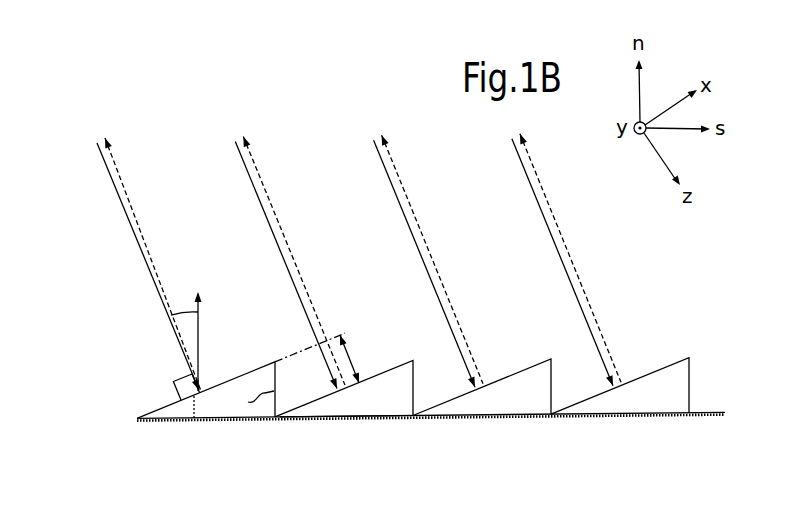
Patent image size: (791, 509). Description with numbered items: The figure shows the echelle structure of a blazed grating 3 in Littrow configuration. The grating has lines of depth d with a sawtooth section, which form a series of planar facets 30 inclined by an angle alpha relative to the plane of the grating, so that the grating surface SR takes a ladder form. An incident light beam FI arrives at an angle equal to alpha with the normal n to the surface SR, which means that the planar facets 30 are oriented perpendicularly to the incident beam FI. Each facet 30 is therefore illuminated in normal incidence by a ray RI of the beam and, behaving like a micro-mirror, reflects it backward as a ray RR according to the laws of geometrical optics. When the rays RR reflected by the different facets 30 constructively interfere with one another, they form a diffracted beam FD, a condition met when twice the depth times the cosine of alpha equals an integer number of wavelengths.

The diffraction grating 3 is at (143, 433).
The planar facet 30 is at (156, 409).
The surface of the grating SR is at (320, 417).
The incident light beam FI is at (134, 239).
The diffracted beam FD is at (262, 158).
The reflected ray RR is at (123, 180).
The ray of the incident beam RI is at (123, 205).